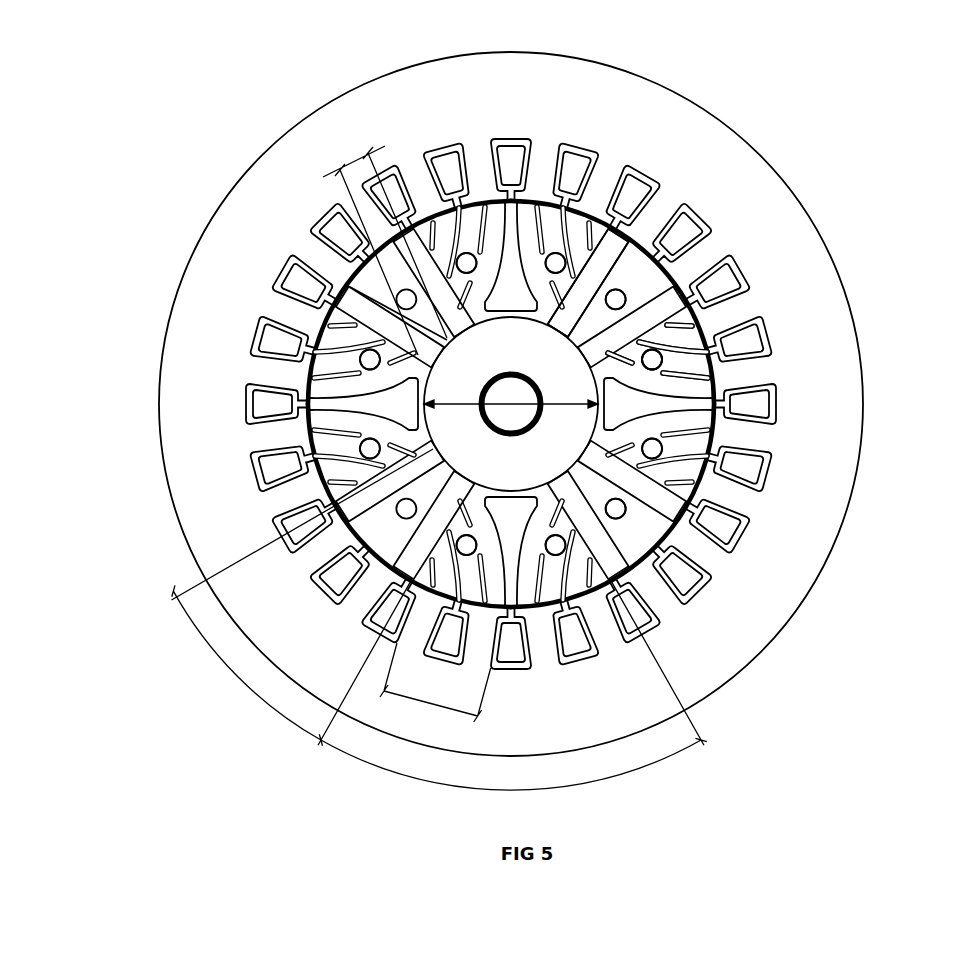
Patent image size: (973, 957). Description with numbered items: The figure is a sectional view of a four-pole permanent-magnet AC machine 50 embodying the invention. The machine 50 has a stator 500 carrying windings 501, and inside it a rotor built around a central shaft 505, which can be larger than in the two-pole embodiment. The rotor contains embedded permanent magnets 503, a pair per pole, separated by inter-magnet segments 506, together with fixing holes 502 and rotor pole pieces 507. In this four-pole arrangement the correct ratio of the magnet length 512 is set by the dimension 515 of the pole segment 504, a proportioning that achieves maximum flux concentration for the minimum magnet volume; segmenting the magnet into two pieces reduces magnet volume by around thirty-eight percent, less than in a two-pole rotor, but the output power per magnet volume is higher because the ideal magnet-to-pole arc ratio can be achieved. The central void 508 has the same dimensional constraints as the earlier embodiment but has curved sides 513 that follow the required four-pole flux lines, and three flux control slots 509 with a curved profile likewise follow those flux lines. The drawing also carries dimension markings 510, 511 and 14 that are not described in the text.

The 4-pole PM AC machine 50 is at (564, 411).
The stator 500 is at (557, 108).
The windings 501 is at (573, 170).
The fixing holes 502 is at (628, 295).
The embedded permanent magnets 503 is at (602, 268).
The pole segment 504 is at (514, 699).
The central shaft 505 is at (630, 527).
The inter-magnet segments 506 is at (545, 450).
The rotor pole pieces 507 is at (660, 335).
The central void 508 is at (775, 392).
The flux control slots 509 is at (772, 450).
The slot width dimension 510 is at (385, 245).
The angular dimension 511 is at (303, 597).
The magnet length 512 is at (398, 307).
The curved sides 513 is at (450, 167).
The dimension 515 is at (435, 682).
The hub diameter dimension 14 is at (511, 412).